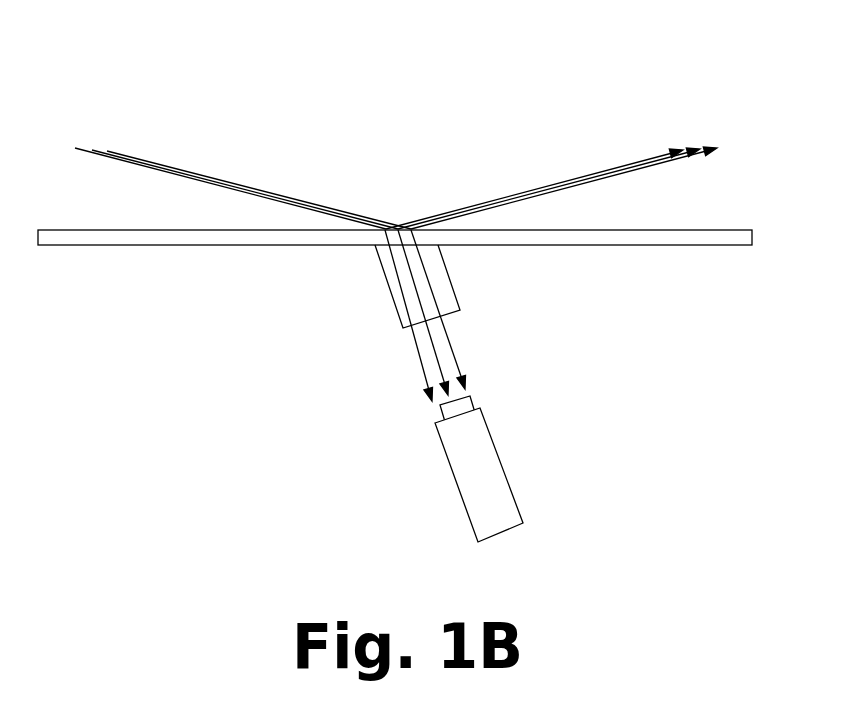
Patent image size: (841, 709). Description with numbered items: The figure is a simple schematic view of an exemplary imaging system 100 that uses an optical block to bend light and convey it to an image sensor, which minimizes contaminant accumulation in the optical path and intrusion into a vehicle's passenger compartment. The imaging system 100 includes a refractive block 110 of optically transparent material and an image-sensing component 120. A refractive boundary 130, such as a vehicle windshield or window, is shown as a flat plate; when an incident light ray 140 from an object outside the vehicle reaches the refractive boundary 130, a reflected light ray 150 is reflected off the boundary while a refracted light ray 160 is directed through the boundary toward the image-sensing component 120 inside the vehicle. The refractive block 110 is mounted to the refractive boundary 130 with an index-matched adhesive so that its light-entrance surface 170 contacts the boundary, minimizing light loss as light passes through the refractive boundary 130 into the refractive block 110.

The imaging system 100 is at (285, 435).
The refractive block 110 is at (390, 293).
The image-sensing component 120 is at (456, 482).
The refractive boundary 130 is at (203, 248).
The incident light ray 140 is at (212, 128).
The reflected light ray 150 is at (505, 177).
The refracted light ray 160 is at (466, 365).
The light-entrance surface 170 is at (434, 254).